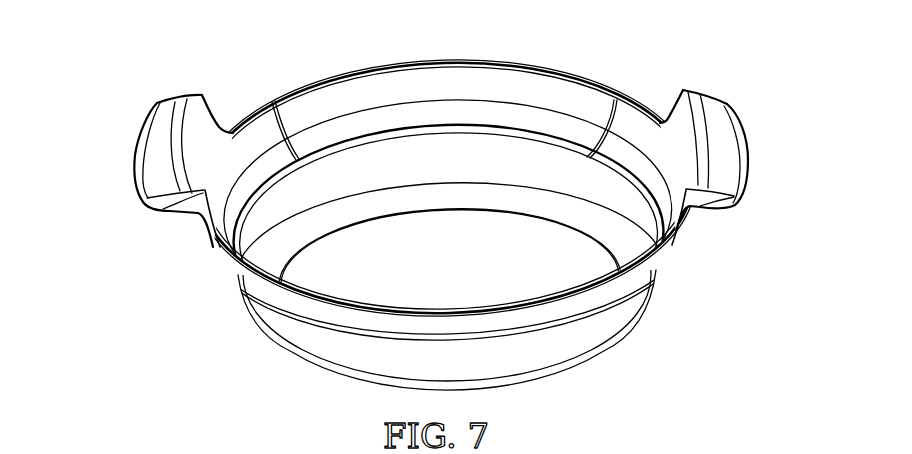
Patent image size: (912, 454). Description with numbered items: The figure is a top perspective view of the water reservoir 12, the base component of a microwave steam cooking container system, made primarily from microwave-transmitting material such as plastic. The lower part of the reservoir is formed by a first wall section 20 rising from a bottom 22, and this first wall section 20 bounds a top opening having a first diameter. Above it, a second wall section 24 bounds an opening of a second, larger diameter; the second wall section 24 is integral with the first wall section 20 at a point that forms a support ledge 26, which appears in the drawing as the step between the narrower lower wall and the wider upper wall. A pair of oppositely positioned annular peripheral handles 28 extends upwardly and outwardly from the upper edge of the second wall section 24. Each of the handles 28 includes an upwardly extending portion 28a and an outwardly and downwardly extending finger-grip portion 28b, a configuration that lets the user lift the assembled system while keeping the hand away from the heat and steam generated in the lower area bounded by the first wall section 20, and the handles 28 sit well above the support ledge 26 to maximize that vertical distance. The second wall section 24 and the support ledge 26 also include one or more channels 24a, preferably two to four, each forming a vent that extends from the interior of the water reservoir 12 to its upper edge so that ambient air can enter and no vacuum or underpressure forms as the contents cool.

The water reservoir 12 is at (243, 312).
The first wall section 20 is at (592, 331).
The bottom 22 is at (458, 263).
The second wall section 24 is at (390, 88).
The channels 24a is at (280, 115).
The support ledge 26 is at (477, 133).
The handles 28 is at (428, 148).
The upwardly extending portion 28a is at (202, 132).
The finger-grip portion 28b is at (160, 168).